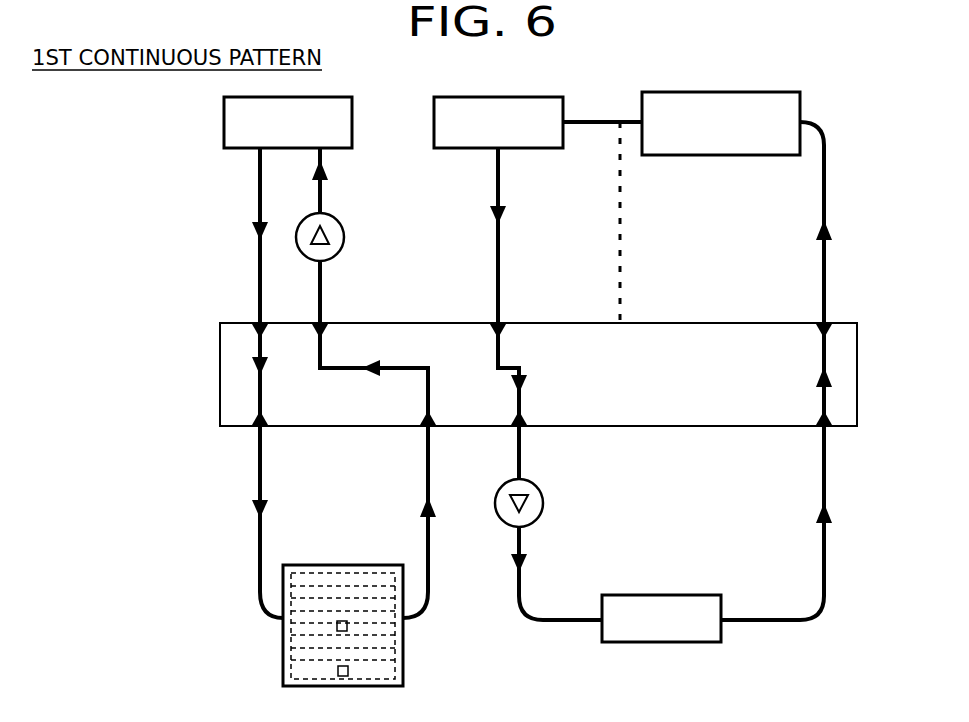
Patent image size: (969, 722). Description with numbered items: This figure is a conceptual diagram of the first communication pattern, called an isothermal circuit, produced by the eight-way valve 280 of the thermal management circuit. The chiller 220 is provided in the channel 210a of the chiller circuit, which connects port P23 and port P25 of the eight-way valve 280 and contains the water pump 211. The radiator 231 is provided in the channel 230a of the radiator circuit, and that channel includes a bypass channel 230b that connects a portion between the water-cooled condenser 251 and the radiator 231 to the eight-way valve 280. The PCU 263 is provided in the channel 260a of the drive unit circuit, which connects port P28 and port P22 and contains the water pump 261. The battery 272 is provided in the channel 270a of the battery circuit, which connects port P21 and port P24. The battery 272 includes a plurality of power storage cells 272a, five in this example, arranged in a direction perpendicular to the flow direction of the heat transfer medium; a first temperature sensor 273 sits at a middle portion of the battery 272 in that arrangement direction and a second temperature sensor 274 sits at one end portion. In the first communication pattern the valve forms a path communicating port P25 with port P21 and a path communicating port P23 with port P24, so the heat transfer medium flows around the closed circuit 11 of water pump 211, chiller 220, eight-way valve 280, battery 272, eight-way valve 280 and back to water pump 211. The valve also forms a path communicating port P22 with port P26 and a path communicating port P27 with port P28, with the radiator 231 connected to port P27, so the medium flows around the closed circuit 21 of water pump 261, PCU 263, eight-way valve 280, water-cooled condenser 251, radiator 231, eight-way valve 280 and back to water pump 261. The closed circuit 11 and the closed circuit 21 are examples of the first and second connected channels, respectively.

The closed circuit 11 is at (258, 197).
The closed circuit 21 is at (830, 566).
The chiller 220 is at (352, 122).
The radiator 231 is at (520, 106).
The water-cooled condenser 251 is at (748, 92).
The channel 210a is at (322, 196).
The water pump 211 is at (338, 224).
The channel 230a is at (492, 210).
The bypass channel 230b is at (624, 258).
The eight-way valve 280 is at (662, 323).
The port P25 is at (250, 328).
The port P23 is at (328, 328).
The port P27 is at (492, 328).
The port P26 is at (817, 328).
The port P21 is at (250, 426).
The port P24 is at (420, 426).
The port P28 is at (511, 426).
The port P22 is at (817, 426).
The water pump 261 is at (538, 484).
The channel 260a is at (525, 598).
The PCU 263 is at (672, 595).
The channel 270a is at (262, 545).
The battery 272 is at (336, 570).
The power storage cell 272a is at (390, 580).
The first temperature sensor 273 is at (348, 625).
The second temperature sensor 274 is at (350, 670).